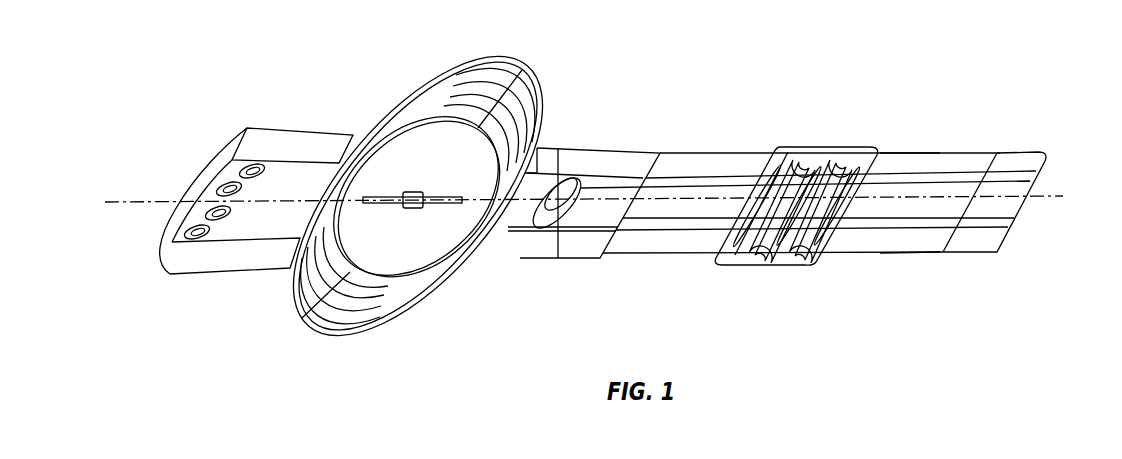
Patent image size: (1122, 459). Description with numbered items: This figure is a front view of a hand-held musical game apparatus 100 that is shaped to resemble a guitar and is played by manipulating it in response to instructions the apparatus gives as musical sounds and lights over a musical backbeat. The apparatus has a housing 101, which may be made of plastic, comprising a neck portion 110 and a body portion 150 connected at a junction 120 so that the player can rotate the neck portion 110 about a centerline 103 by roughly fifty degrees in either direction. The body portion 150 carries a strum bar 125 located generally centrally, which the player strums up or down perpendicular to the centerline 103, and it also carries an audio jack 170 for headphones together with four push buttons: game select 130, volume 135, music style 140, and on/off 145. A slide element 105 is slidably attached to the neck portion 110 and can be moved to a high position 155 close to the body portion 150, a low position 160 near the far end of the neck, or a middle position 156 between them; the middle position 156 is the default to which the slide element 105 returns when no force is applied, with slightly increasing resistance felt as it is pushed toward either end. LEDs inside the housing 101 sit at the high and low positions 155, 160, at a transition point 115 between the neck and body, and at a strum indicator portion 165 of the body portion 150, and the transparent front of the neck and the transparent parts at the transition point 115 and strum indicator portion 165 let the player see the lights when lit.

The hand-held musical game apparatus 100 is at (970, 64).
The housing 101 is at (518, 264).
The centerline 103 is at (1048, 193).
The slide element 105 is at (793, 147).
The neck portion 110 is at (707, 143).
The transition point 115 is at (566, 192).
The junction 120 is at (562, 180).
The strum bar 125 is at (380, 197).
The game select push button 130 is at (244, 168).
The volume push button 135 is at (223, 187).
The music style push button 140 is at (208, 215).
The on/off push button 145 is at (188, 236).
The body portion 150 is at (338, 94).
The high position 155 is at (660, 262).
The middle position 156 is at (766, 277).
The low position 160 is at (880, 260).
The strum indicator portion 165 is at (361, 160).
The audio jack 170 is at (163, 277).